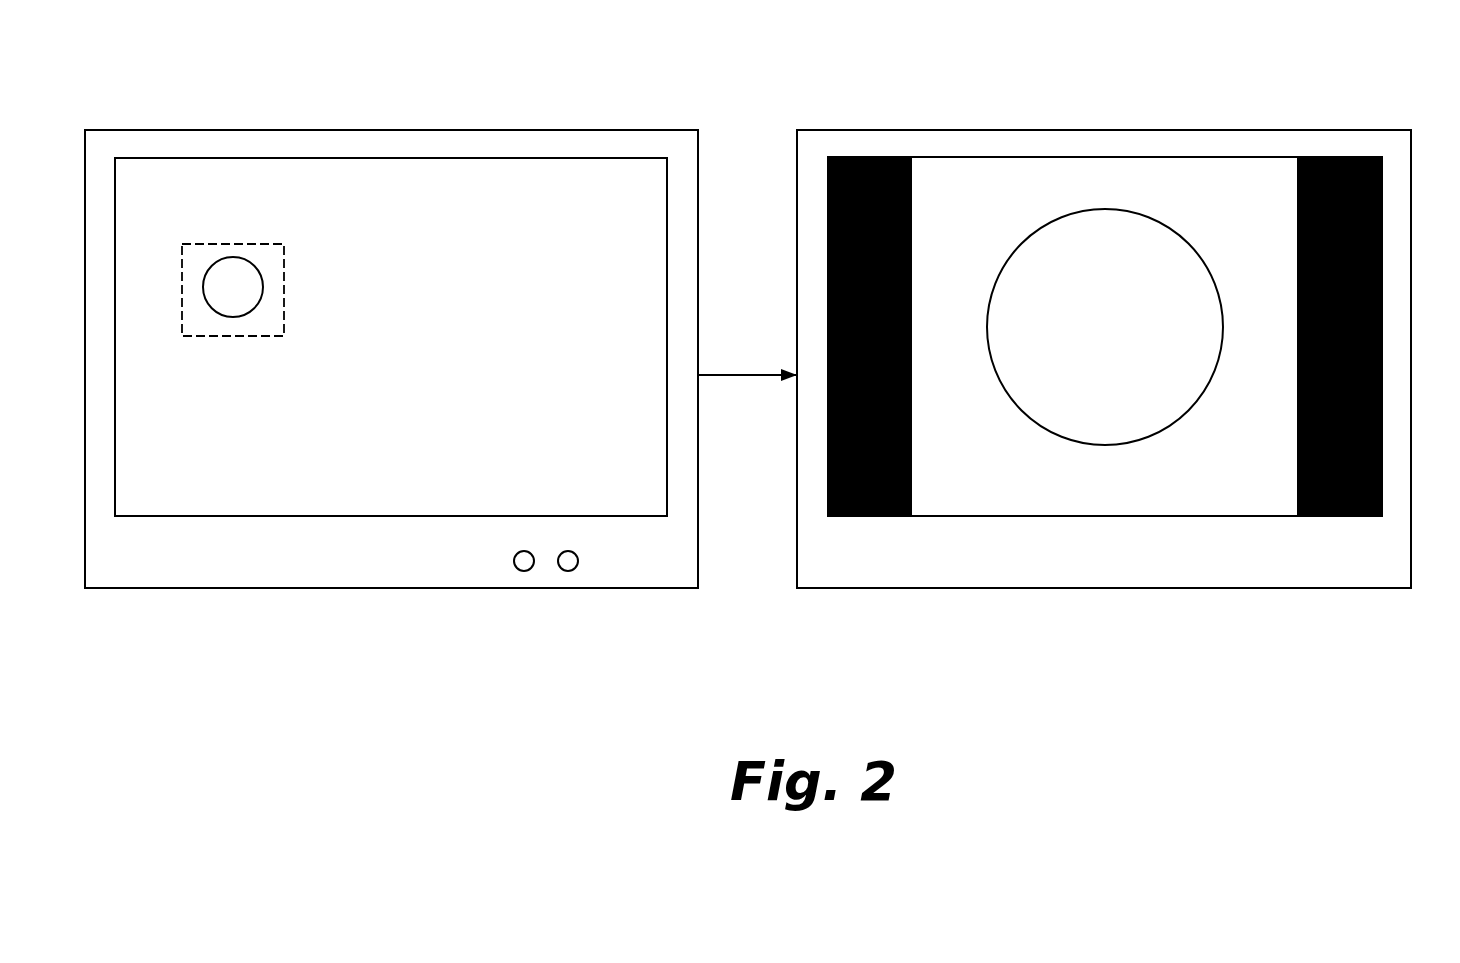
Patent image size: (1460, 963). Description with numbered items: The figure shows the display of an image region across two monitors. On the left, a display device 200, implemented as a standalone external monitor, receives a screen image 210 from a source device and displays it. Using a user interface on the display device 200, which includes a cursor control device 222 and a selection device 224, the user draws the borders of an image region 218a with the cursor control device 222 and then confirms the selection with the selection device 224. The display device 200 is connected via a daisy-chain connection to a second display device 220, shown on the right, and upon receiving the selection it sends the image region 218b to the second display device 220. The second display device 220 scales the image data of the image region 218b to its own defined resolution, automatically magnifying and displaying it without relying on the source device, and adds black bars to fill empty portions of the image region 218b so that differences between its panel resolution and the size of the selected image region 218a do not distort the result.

The display device 200 is at (182, 130).
The screen image 210 is at (443, 182).
The image region 218a is at (263, 242).
The image region 218b is at (1233, 188).
The second display device 220 is at (1102, 130).
The cursor control device 222 is at (518, 569).
The selection device 224 is at (572, 570).